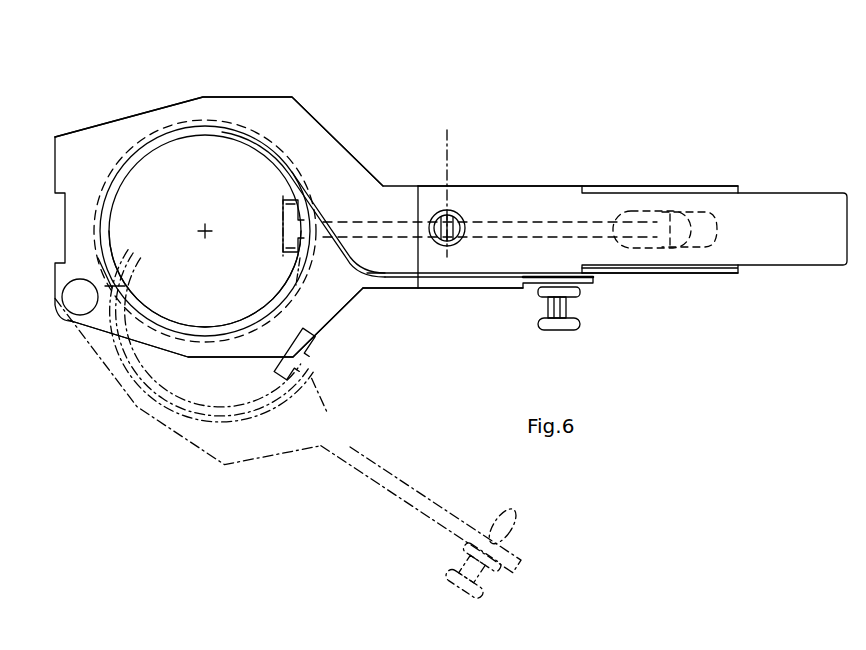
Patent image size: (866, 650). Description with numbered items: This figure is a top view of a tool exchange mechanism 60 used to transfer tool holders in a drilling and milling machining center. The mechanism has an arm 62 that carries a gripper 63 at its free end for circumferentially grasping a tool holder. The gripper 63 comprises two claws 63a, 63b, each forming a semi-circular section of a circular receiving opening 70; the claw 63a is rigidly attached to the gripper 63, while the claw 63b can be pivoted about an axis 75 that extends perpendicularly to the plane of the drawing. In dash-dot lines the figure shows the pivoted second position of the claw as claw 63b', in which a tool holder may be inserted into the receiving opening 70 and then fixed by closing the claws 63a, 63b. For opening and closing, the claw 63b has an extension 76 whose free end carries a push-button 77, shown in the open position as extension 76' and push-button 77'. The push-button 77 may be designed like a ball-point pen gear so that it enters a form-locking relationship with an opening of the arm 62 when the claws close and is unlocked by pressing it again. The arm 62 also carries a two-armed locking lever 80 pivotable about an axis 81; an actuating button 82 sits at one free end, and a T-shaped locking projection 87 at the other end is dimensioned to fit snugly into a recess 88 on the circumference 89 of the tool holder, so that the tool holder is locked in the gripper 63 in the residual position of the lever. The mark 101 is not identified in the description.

The tool exchange mechanism 60 is at (517, 90).
The arm 62 is at (793, 192).
The gripper 63 is at (349, 143).
The claw 63a is at (163, 115).
The claw 63b is at (330, 294).
The claw in second position 63b' is at (199, 354).
The receiving opening 70 is at (226, 138).
The axis 75 is at (78, 300).
The extension 76 is at (550, 304).
The extension in second position 76' is at (421, 502).
The push-button 77 is at (581, 308).
The push-button in second position 77' is at (487, 557).
The locking lever 80 is at (533, 225).
The axis 81 is at (447, 143).
The actuating button 82 is at (700, 228).
The locking projection 87 is at (280, 231).
The recess 88 is at (280, 238).
The circumference 89 is at (277, 292).
The center axis 101 is at (203, 233).